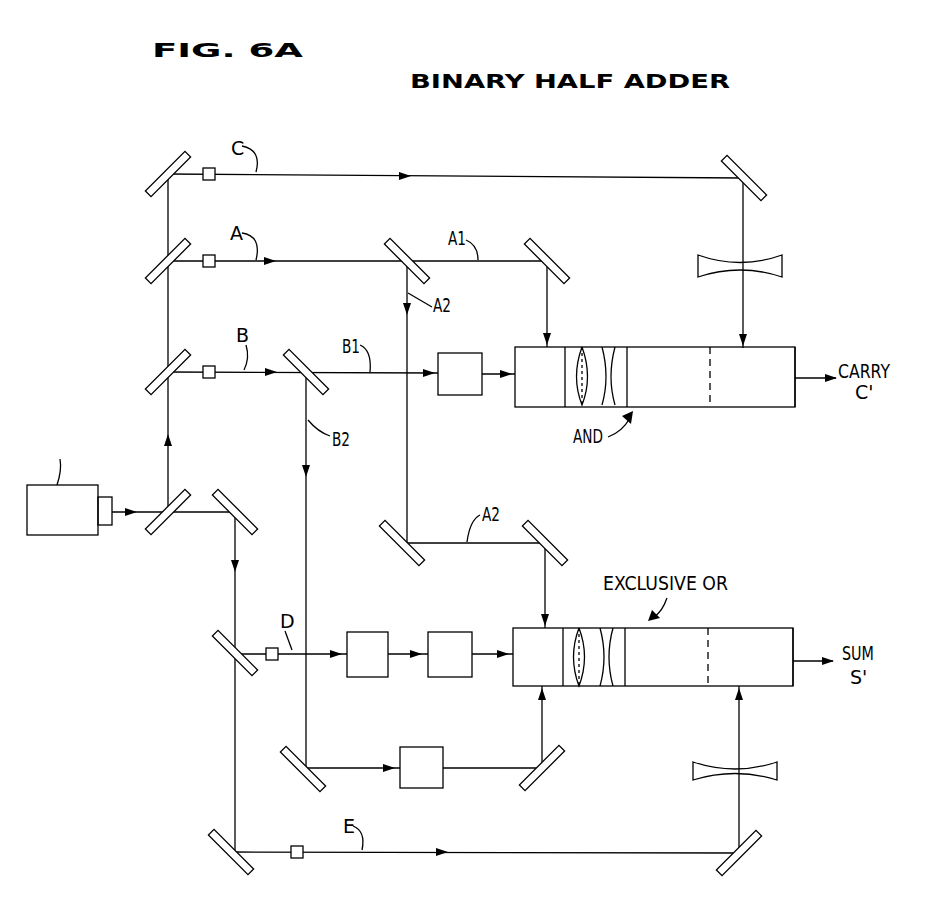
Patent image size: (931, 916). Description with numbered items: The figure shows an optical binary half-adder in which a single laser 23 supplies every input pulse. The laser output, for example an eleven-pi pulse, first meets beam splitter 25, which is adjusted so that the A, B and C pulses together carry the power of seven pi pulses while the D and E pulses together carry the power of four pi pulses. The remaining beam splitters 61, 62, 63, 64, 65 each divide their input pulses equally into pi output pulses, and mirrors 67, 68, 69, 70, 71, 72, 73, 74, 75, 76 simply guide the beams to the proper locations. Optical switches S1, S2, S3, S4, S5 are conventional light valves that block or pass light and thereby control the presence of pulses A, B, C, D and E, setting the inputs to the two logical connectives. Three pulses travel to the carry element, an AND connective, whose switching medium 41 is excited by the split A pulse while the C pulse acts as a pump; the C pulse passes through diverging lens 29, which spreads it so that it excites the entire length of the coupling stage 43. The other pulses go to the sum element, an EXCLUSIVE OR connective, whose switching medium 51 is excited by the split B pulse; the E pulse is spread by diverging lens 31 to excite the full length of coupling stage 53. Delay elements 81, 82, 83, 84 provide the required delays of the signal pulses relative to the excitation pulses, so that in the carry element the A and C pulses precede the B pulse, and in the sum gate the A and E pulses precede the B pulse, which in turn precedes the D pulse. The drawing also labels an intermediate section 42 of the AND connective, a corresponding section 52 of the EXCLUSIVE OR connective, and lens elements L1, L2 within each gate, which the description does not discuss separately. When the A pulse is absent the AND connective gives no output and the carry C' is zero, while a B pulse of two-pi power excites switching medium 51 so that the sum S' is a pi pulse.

The laser 23 is at (69, 537).
The beam splitter 25 is at (168, 524).
The diverging lens 29 is at (787, 268).
The diverging lens 31 is at (782, 772).
The switching medium 41 is at (545, 377).
The AND gate section 42 is at (668, 377).
The coupling stage 43 is at (766, 377).
The switching medium 51 is at (543, 657).
The exclusive OR gate section 52 is at (666, 657).
The coupling stage 53 is at (764, 657).
The beam splitter 61 is at (162, 373).
The beam splitter 62 is at (162, 262).
The beam splitter 63 is at (304, 358).
The beam splitter 64 is at (406, 250).
The beam splitter 65 is at (215, 645).
The mirror 67 is at (162, 171).
The mirror 68 is at (754, 180).
The mirror 69 is at (559, 262).
The mirror 70 is at (250, 513).
The mirror 71 is at (396, 553).
The mirror 72 is at (561, 543).
The mirror 73 is at (225, 855).
The mirror 74 is at (292, 772).
The mirror 75 is at (552, 775).
The mirror 76 is at (750, 858).
The delay element 81 is at (464, 396).
The delay element 82 is at (381, 632).
The delay element 83 is at (463, 632).
The delay element 84 is at (433, 747).
The optical switch S1 is at (209, 180).
The optical switch S2 is at (209, 267).
The optical switch S3 is at (209, 378).
The optical switch S4 is at (272, 660).
The optical switch S5 is at (297, 858).
The convex lens L1 is at (583, 347).
The concave lens L2 is at (612, 347).